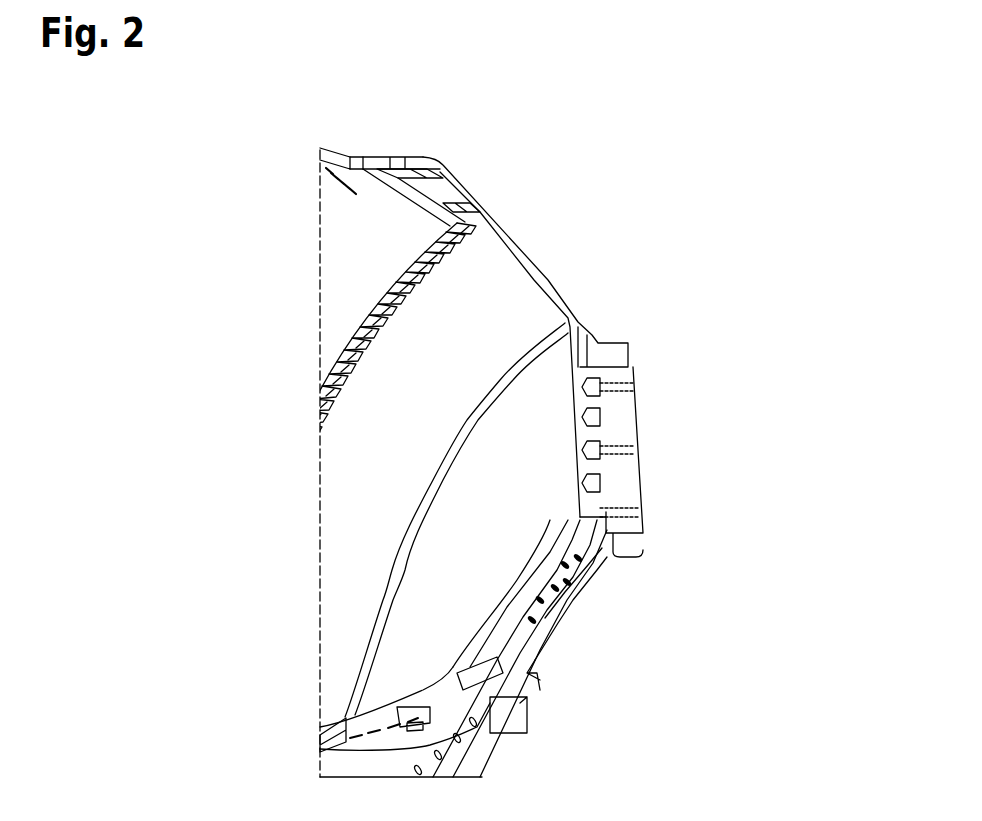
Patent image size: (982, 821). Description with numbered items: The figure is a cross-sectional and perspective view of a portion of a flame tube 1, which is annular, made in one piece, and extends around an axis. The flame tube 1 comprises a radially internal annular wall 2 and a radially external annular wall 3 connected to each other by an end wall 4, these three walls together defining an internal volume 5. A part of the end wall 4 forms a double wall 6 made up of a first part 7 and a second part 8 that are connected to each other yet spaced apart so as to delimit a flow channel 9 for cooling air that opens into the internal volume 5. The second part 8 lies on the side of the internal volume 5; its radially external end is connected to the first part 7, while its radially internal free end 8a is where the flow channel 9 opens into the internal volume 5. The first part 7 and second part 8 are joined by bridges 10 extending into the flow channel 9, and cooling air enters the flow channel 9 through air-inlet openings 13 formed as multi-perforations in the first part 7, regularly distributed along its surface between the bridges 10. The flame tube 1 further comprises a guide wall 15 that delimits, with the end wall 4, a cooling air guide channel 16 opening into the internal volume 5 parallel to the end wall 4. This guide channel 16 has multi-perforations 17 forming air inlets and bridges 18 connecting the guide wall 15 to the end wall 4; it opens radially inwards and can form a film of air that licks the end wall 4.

The flame tube 1 is at (459, 432).
The radially internal annular wall 2 is at (333, 750).
The radially external annular wall 3 is at (329, 148).
The end wall 4 is at (523, 260).
The internal volume 5 is at (380, 508).
The double wall 6 is at (632, 573).
The first part 7 is at (573, 605).
The second part 8 is at (550, 572).
The free end 8a is at (320, 730).
The flow channel 9 is at (528, 693).
The bridges 10 is at (628, 493).
The air-inlet openings 13 is at (637, 450).
The guide wall 15 is at (420, 198).
The cooling air guide channel 16 is at (478, 208).
The multi-perforations 17 is at (397, 157).
The bridges 18 is at (432, 192).